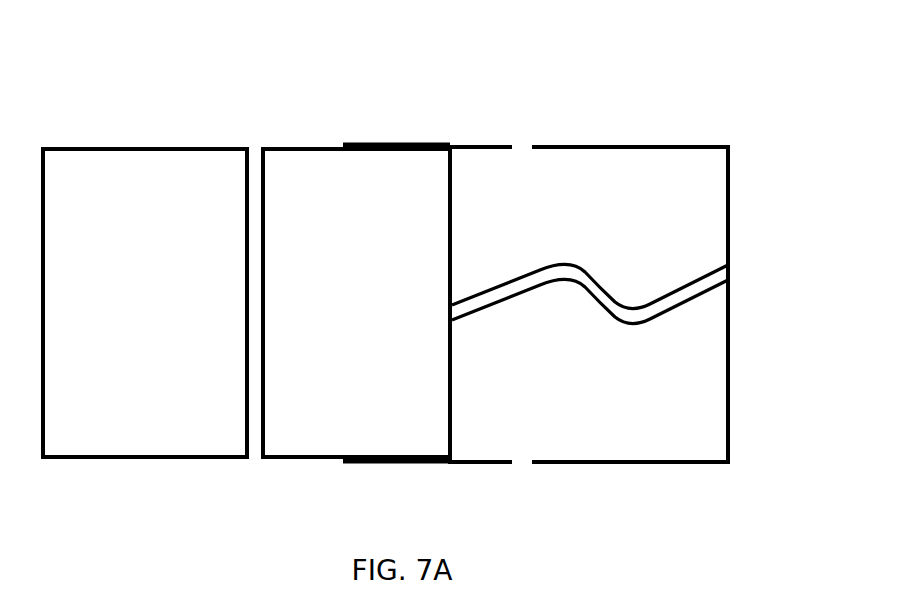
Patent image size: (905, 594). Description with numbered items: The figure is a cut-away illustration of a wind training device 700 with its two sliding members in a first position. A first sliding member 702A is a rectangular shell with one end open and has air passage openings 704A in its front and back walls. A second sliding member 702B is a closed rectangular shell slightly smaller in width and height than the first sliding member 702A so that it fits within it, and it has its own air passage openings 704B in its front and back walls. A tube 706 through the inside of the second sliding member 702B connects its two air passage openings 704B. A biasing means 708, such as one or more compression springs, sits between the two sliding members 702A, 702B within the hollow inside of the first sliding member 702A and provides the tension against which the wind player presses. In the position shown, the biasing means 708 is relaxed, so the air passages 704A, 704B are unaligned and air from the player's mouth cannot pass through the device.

The wind training device 700 is at (676, 86).
The first sliding member 702A is at (640, 462).
The second sliding member 702B is at (113, 151).
The air passage openings 704A is at (524, 136).
The air passage openings 704B is at (255, 140).
The tube 706 is at (246, 310).
The biasing means 708 is at (607, 308).